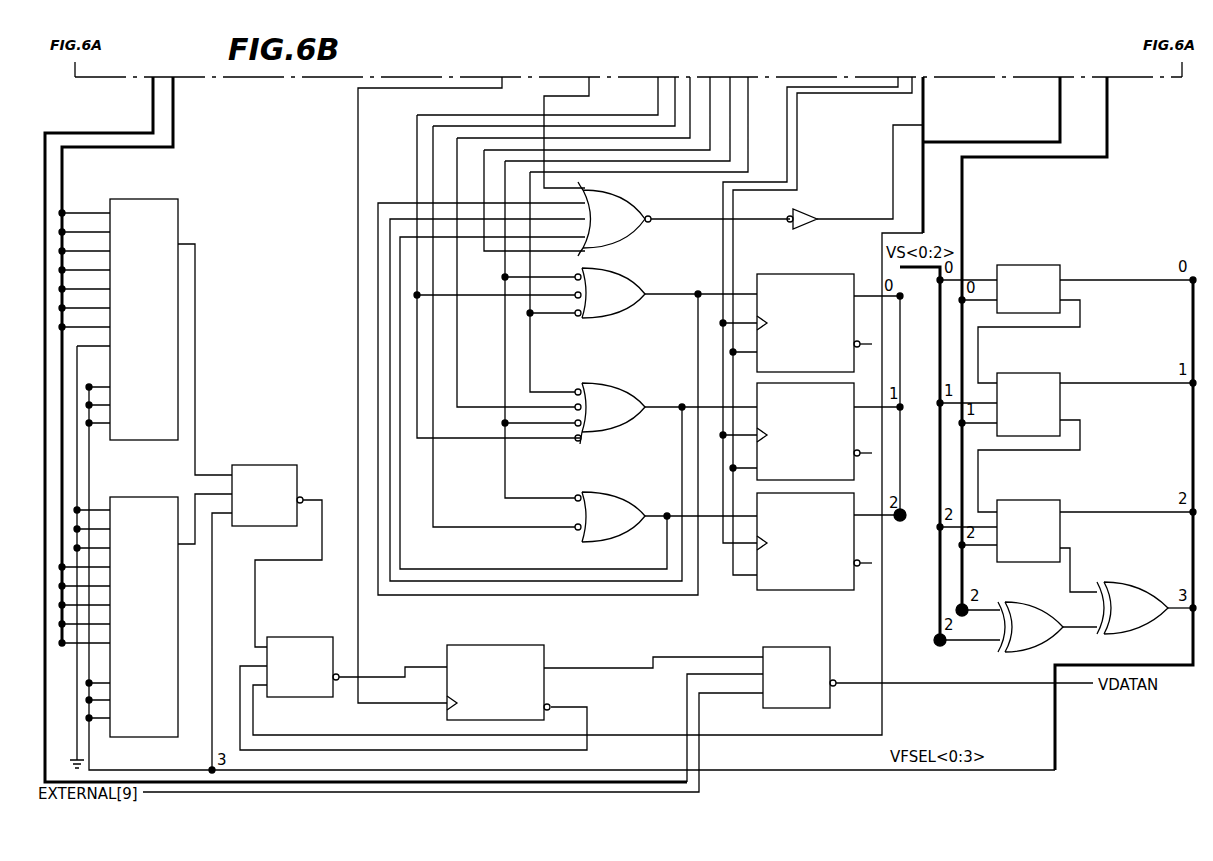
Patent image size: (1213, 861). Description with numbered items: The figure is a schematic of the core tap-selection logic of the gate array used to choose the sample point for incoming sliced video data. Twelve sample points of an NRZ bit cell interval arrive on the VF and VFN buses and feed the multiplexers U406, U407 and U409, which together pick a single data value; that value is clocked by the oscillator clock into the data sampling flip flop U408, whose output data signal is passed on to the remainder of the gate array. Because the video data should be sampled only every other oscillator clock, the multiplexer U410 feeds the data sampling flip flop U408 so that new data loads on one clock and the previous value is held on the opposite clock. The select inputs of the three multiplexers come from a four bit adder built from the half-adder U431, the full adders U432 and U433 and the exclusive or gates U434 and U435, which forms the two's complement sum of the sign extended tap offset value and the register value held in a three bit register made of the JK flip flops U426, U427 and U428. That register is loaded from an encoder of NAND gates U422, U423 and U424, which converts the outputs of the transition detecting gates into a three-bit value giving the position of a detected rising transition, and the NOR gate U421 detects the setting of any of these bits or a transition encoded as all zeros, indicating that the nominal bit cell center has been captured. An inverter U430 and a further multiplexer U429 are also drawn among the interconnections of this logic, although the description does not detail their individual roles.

The multiplexer U406 is at (145, 318).
The multiplexer U407 is at (145, 598).
The data sampling flip flop U408 is at (605, 682).
The multiplexer U409 is at (267, 598).
The multiplexer U410 is at (413, 675).
The NOR gate U421 is at (684, 219).
The NAND gate U422 is at (666, 292).
The NAND gate U423 is at (666, 411).
The NAND gate U424 is at (666, 514).
The JK flip flop U426 is at (830, 323).
The JK flip flop U427 is at (830, 431).
The JK flip flop U428 is at (831, 541).
The 2-to-1 multiplexer MUX21L U429 is at (799, 659).
The inverter IV U430 is at (855, 185).
The half-adder U431 is at (1085, 306).
The full adder U432 is at (1085, 424).
The full adder U433 is at (1095, 528).
The exclusive or gate U434 is at (1047, 619).
The exclusive or gate U435 is at (1145, 601).